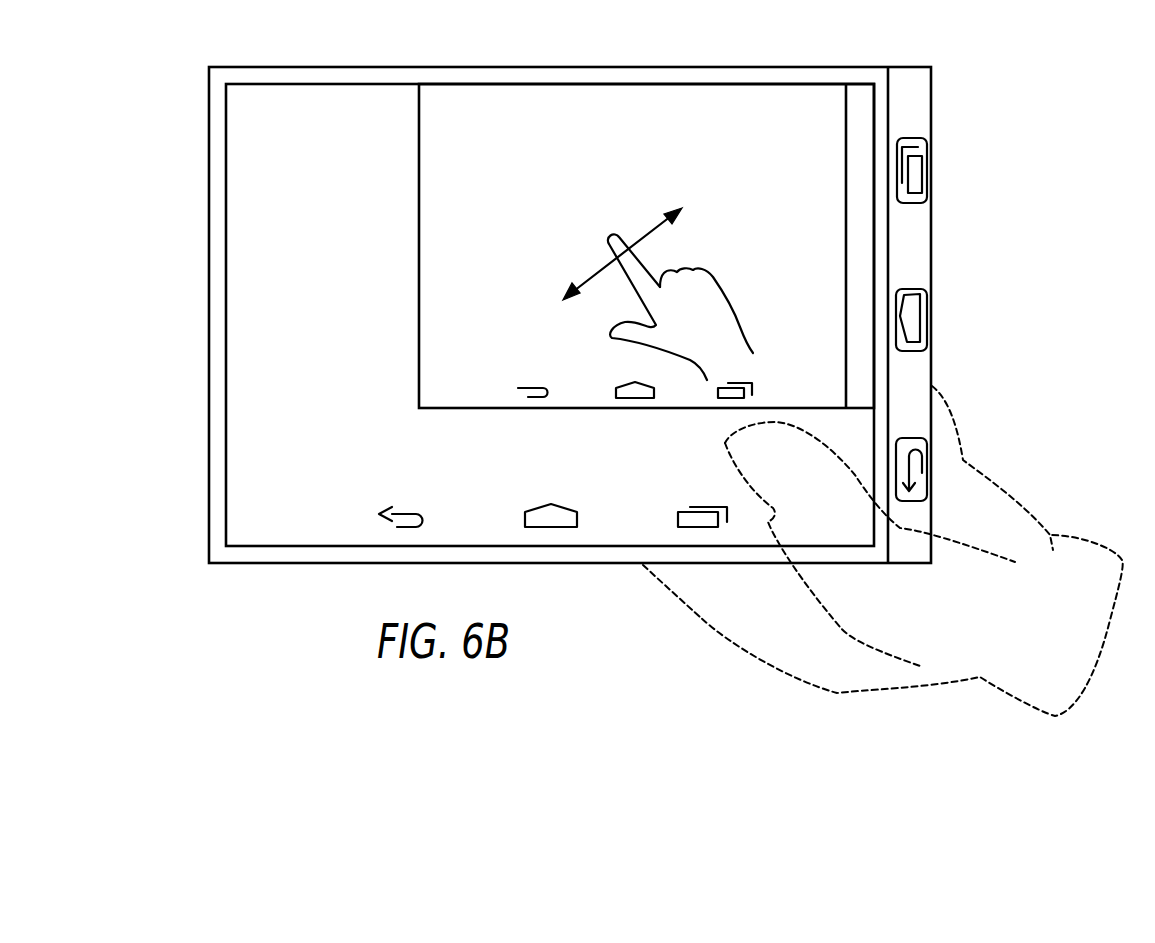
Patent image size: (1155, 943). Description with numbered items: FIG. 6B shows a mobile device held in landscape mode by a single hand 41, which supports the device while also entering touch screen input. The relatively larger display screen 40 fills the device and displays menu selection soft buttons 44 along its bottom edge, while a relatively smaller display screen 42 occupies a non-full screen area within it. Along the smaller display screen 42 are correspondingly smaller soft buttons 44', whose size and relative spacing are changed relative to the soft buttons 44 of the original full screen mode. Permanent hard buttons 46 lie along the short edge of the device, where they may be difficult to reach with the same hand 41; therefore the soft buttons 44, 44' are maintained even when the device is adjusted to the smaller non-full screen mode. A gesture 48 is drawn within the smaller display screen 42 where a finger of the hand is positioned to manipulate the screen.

The display screen 40 is at (207, 433).
The hand 41 is at (677, 598).
The display screen 42 is at (419, 192).
The soft buttons 44 is at (526, 318).
The soft buttons 44' is at (558, 371).
The hard buttons 46 is at (910, 130).
The resize gesture 48 is at (579, 249).